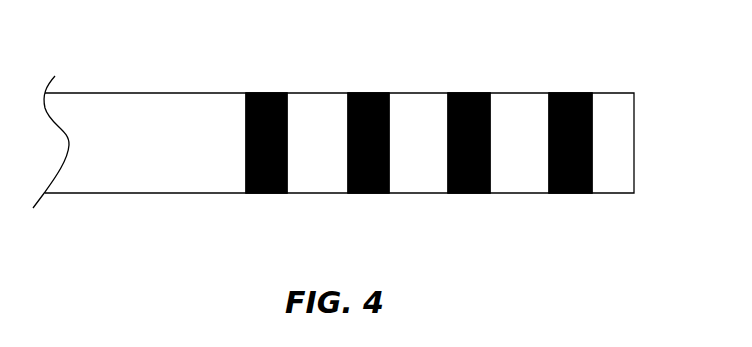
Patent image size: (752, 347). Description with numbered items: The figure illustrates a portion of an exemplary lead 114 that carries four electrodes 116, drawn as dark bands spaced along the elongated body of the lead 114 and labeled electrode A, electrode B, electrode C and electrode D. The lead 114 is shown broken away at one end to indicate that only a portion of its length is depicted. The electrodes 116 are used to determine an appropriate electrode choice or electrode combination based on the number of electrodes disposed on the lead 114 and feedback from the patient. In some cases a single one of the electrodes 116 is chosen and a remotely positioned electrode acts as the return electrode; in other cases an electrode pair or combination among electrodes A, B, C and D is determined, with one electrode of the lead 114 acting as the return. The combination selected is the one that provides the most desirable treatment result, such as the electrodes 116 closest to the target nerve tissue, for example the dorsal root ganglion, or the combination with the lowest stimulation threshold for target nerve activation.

The lead 114 is at (537, 46).
The electrodes 116 is at (272, 200).
The electrode A is at (266, 123).
The electrode B is at (368, 123).
The electrode C is at (469, 123).
The electrode D is at (570, 123).